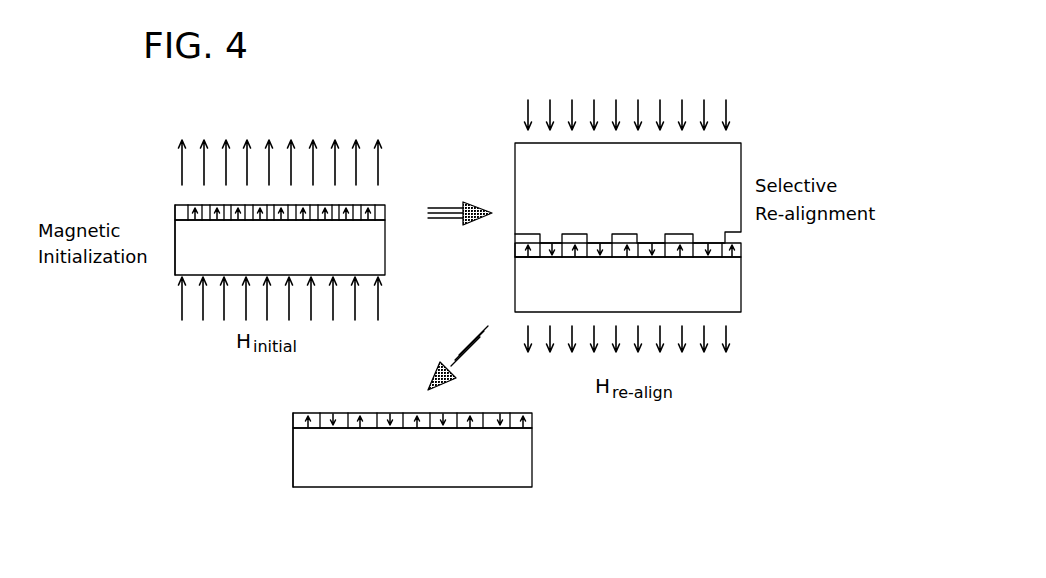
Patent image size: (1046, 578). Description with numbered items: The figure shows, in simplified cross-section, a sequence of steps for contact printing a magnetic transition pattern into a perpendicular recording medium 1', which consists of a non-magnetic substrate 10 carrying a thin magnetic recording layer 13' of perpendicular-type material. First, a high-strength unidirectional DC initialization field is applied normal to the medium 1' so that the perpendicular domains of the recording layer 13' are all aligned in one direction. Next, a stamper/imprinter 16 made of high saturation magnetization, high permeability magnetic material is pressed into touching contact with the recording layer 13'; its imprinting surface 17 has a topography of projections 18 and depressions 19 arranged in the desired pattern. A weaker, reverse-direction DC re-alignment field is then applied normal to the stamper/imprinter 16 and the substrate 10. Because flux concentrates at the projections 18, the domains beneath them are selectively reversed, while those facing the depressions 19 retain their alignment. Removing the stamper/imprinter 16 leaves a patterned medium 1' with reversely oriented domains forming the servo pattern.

The perpendicular recording medium 1' is at (196, 356).
The non-magnetic substrate 10 is at (273, 262).
The magnetic recording layer 13' is at (497, 329).
The stamper/imprinter 16 is at (745, 151).
The imprinting surface 17 is at (515, 241).
The projections 18 is at (550, 243).
The depressions 19 is at (575, 234).